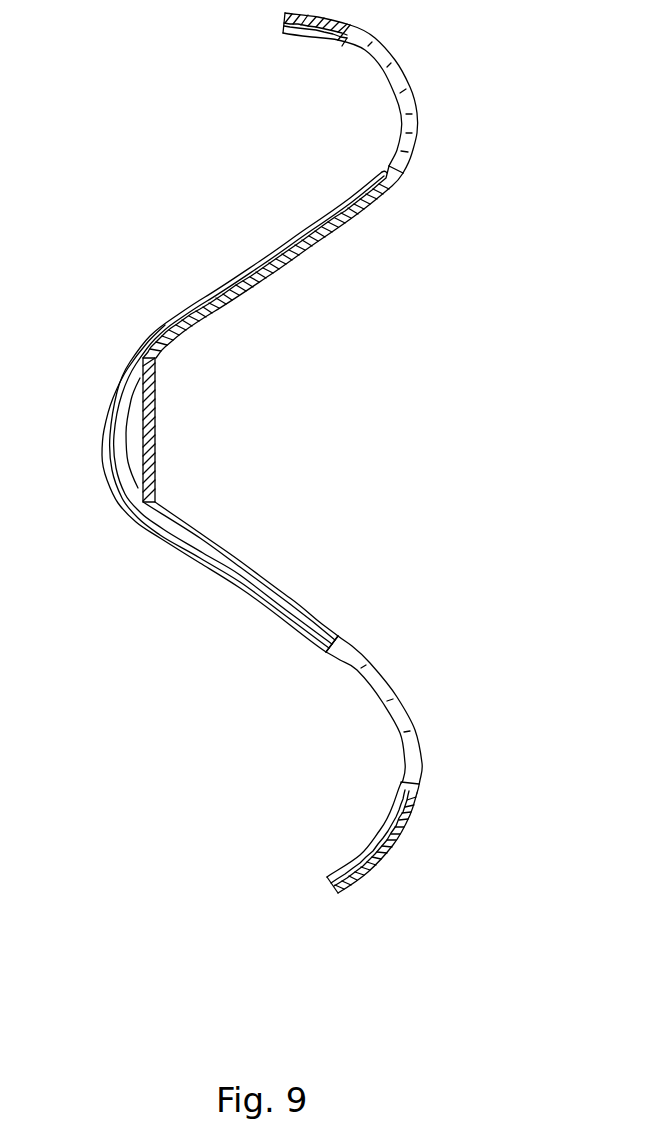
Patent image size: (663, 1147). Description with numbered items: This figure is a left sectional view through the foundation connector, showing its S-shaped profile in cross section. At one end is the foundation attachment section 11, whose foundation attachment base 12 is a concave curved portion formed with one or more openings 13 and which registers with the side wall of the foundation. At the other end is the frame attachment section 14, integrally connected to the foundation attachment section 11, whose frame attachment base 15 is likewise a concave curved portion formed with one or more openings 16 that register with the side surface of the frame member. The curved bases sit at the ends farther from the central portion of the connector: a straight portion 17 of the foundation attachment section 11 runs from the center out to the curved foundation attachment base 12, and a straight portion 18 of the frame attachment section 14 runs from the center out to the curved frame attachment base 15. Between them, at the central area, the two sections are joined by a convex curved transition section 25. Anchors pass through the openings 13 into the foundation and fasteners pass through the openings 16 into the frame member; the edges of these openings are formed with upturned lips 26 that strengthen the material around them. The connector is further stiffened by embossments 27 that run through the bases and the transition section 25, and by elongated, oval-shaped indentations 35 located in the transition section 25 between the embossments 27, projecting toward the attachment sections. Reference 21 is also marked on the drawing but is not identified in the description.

The foundation attachment section 11 is at (334, 622).
The foundation attachment base 12 is at (423, 763).
The openings 13 is at (375, 668).
The frame attachment section 14 is at (381, 206).
The frame attachment base 15 is at (383, 38).
The openings 16 is at (395, 71).
The straight portion 17 is at (278, 587).
The straight portion 18 is at (283, 274).
The intermediate layer 21 is at (385, 172).
The transition section 25 is at (100, 382).
The upturned lips 26 is at (347, 44).
The embossments 27 is at (213, 568).
The indentations 35 is at (135, 423).